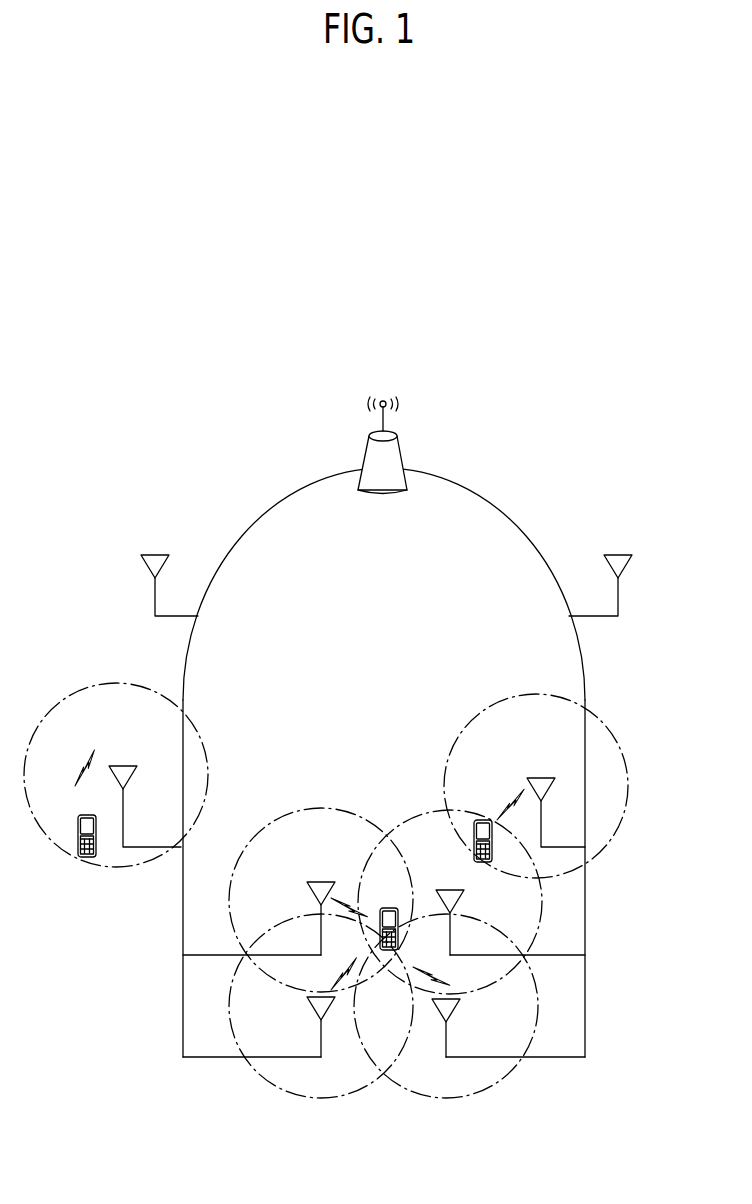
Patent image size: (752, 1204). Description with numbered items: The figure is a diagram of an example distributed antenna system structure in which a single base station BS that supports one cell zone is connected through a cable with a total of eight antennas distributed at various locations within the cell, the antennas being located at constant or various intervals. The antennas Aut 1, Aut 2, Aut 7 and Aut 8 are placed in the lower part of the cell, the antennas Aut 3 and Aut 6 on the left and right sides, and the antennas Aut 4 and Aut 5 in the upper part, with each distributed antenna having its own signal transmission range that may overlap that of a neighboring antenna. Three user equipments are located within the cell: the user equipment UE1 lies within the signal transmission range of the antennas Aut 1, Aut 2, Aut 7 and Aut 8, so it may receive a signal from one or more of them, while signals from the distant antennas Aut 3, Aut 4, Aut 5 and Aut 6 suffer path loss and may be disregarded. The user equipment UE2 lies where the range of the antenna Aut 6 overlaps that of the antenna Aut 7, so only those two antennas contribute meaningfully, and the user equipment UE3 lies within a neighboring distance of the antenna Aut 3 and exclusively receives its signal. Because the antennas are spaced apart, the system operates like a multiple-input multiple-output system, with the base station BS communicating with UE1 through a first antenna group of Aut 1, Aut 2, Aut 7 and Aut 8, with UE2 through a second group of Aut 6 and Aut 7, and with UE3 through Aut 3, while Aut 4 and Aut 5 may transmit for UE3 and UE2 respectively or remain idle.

The base station BS is at (382, 445).
The antenna 1 Aut 1 is at (321, 1006).
The antenna 2 Aut 2 is at (321, 900).
The antenna 3 Aut 3 is at (116, 775).
The antenna 4 Aut 4 is at (151, 585).
The antenna 5 Aut 5 is at (619, 585).
The antenna 6 Aut 6 is at (536, 786).
The antenna 7 Aut 7 is at (450, 902).
The antenna 8 Aut 8 is at (446, 1006).
The user equipment 1 UE1 is at (387, 941).
The user equipment 2 UE2 is at (505, 832).
The user equipment 3 UE3 is at (86, 816).